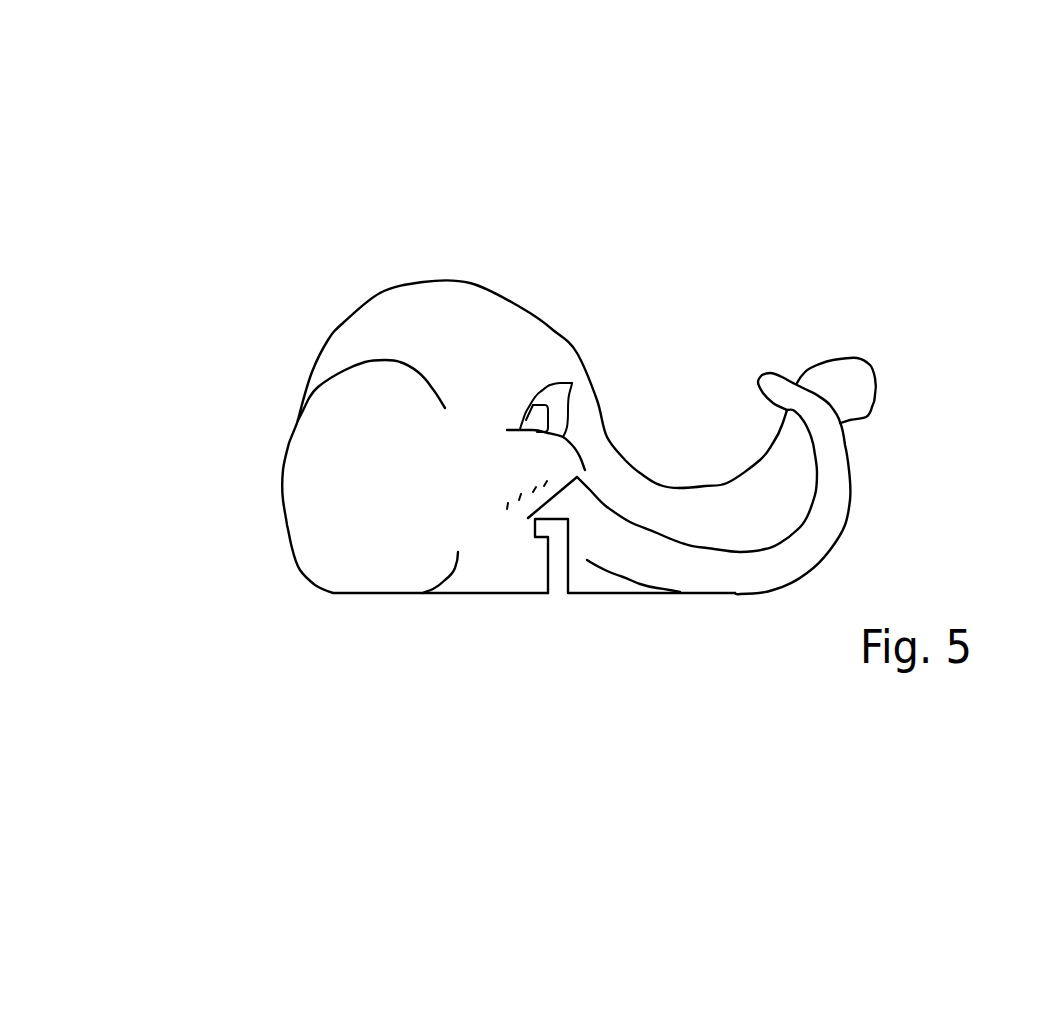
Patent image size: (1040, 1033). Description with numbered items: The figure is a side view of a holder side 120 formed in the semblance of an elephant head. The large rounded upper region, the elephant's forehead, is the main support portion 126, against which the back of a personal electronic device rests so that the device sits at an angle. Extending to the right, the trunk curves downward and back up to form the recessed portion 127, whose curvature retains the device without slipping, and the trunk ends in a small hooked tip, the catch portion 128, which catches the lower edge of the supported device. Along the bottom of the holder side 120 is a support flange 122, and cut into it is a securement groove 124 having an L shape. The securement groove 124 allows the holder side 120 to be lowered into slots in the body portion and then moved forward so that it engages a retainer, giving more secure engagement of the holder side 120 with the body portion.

The holder side 120 is at (436, 303).
The support flange 122 is at (352, 578).
The securement groove 124 is at (553, 597).
The main support portion 126 is at (478, 298).
The recessed portion 127 is at (640, 487).
The catch portion 128 is at (768, 372).